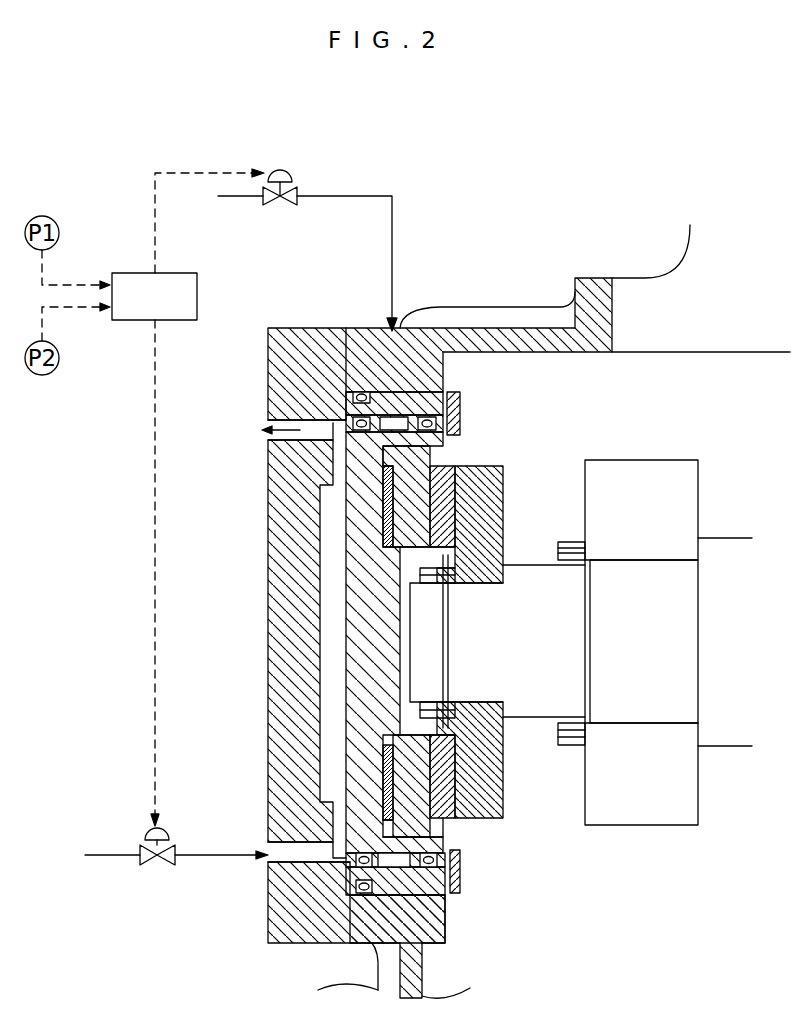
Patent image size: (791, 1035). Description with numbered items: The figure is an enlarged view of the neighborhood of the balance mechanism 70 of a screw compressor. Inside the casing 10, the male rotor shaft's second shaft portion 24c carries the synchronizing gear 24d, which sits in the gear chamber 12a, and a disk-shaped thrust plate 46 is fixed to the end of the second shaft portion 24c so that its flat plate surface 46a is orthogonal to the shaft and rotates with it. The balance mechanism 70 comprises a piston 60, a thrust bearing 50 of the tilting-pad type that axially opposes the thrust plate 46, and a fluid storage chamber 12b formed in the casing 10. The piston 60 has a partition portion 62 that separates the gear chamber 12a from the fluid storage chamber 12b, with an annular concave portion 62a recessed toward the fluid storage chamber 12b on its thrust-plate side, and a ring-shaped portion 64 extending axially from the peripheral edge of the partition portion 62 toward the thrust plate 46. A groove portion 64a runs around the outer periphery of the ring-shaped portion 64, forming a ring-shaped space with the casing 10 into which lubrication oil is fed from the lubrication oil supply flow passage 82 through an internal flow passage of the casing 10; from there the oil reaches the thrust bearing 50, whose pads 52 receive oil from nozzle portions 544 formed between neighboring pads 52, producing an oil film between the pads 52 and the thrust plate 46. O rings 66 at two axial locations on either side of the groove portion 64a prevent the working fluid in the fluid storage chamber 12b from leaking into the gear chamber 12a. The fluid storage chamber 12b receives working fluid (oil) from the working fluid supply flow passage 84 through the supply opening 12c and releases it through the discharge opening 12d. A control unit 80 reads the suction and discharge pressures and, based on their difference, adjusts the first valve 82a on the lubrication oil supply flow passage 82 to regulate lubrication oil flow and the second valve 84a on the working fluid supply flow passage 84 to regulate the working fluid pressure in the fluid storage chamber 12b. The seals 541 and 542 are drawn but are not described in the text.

The casing 10 is at (590, 278).
The gear chamber 12a is at (648, 385).
The fluid storage chamber 12b is at (330, 598).
The supply opening 12c is at (268, 845).
The discharge opening 12d is at (268, 443).
The second shaft portion 24c is at (730, 538).
The synchronizing gear 24d is at (630, 460).
The thrust plate 46 is at (503, 478).
The plate surface 46a is at (572, 757).
The thrust bearing 50 is at (447, 830).
The pads 52 is at (445, 470).
The first seal 541 is at (383, 505).
The second seal 542 is at (383, 540).
The nozzle portion 544 is at (470, 486).
The piston 60 is at (518, 890).
The partition portion 62 is at (447, 930).
The concave portion 62a is at (443, 422).
The ring-shaped portion 64 is at (447, 905).
The groove portion 64a is at (395, 425).
The O rings 66 is at (353, 398).
The balance mechanism 70 is at (572, 845).
The control unit 80 is at (128, 273).
The lubrication oil supply flow passage 82 is at (358, 194).
The first valve 82a is at (279, 168).
The working fluid supply flow passage 84 is at (95, 855).
The second valve 84a is at (145, 832).